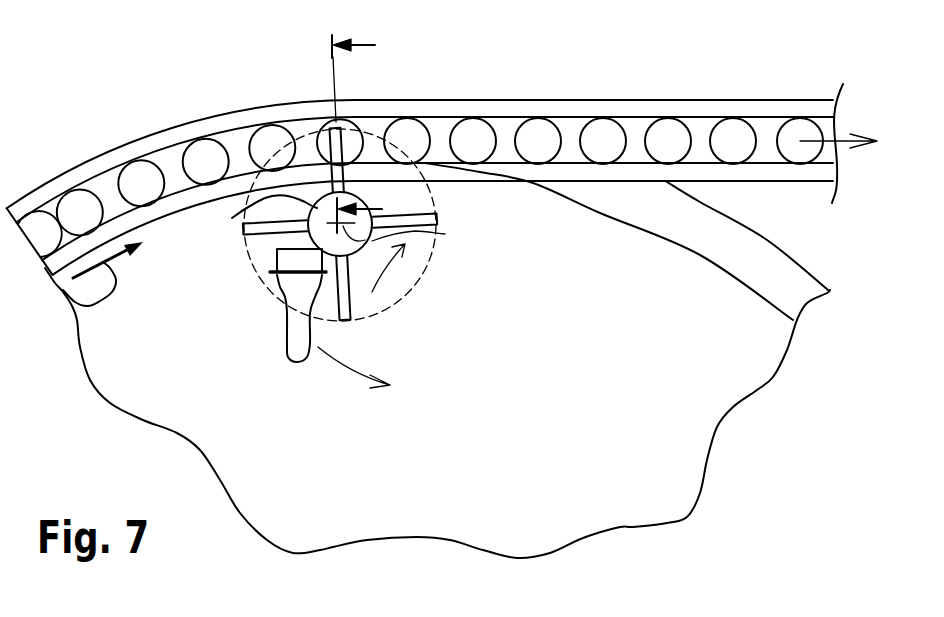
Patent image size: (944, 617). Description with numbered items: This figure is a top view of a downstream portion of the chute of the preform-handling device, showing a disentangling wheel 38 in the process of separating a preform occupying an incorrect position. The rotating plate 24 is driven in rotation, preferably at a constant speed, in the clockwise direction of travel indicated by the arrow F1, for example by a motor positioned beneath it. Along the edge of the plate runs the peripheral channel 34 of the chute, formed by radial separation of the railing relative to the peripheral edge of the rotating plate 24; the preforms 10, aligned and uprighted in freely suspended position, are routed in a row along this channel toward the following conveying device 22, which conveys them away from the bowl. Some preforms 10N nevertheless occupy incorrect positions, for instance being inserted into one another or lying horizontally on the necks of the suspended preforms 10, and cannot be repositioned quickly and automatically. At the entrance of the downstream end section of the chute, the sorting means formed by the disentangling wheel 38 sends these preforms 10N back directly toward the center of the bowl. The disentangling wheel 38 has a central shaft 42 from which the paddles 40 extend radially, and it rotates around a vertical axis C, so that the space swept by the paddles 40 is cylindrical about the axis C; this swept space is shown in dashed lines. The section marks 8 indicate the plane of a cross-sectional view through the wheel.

The section line 8- 8 is at (357, 127).
The preform 10 is at (203, 160).
The preform occupying an incorrect position 10N is at (293, 334).
The following conveying device 22 is at (635, 133).
The rotating plate 24 is at (688, 373).
The peripheral channel 34 is at (438, 143).
The disentangling wheel 38 is at (346, 250).
The paddle 40 is at (345, 302).
The central shaft 42 is at (247, 210).
The vertical axis C is at (418, 237).
The direction of travel F1 is at (77, 315).